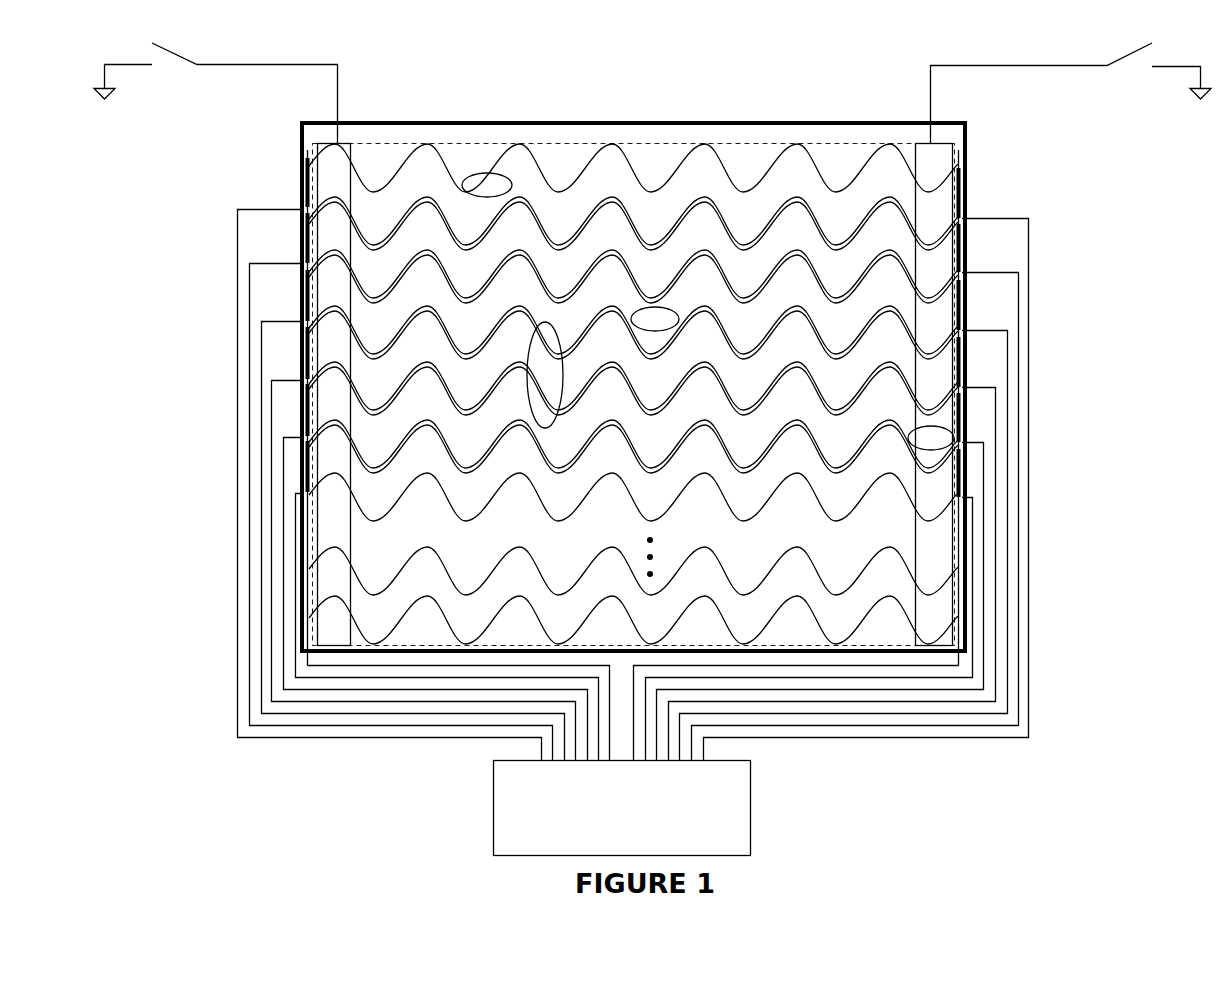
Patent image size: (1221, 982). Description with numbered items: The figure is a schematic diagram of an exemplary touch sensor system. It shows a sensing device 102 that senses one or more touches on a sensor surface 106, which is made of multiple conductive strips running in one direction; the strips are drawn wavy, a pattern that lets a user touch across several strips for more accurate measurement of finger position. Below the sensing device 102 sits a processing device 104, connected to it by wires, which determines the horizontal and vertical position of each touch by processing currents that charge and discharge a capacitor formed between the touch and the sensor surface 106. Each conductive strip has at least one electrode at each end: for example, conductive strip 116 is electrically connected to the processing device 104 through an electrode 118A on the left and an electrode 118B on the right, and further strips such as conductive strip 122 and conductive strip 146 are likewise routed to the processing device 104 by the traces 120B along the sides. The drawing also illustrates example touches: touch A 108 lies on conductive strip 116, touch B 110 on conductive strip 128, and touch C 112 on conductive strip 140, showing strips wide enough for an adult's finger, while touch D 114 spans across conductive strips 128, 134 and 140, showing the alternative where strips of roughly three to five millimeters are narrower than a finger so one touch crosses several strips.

The sensing device 102 is at (968, 131).
The processing device 104 is at (750, 803).
The sensor surface 106 is at (935, 163).
The touch A 108 is at (482, 173).
The touch B 110 is at (652, 307).
The touch C 112 is at (946, 437).
The touch D 114 is at (527, 400).
The conductive strip 116 is at (935, 207).
The electrode 118A is at (302, 185).
The electrode 118B is at (962, 188).
The routing traces 120B is at (237, 231).
The conductive line 122 is at (940, 263).
The conductive strip 128 is at (940, 318).
The conductive strip 134 is at (940, 378).
The conductive strip 140 is at (943, 415).
The conductive line 146 is at (940, 485).